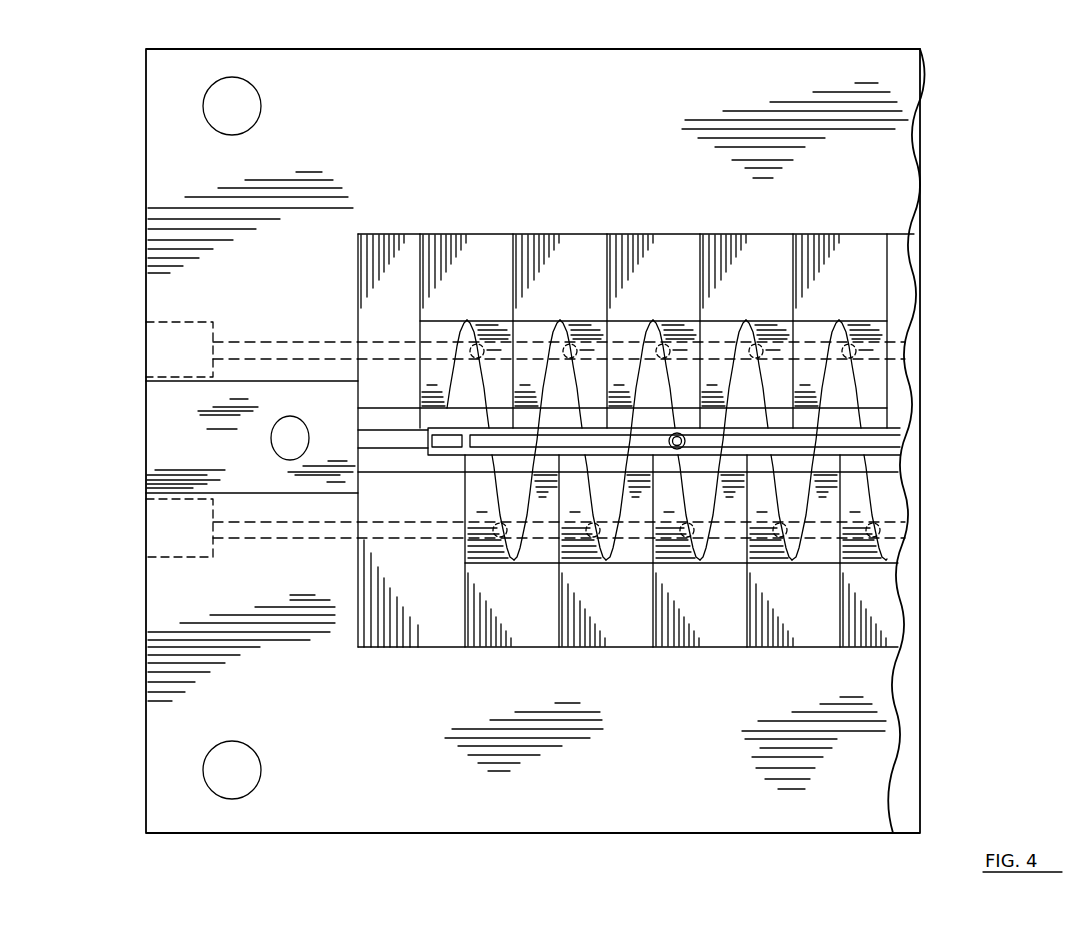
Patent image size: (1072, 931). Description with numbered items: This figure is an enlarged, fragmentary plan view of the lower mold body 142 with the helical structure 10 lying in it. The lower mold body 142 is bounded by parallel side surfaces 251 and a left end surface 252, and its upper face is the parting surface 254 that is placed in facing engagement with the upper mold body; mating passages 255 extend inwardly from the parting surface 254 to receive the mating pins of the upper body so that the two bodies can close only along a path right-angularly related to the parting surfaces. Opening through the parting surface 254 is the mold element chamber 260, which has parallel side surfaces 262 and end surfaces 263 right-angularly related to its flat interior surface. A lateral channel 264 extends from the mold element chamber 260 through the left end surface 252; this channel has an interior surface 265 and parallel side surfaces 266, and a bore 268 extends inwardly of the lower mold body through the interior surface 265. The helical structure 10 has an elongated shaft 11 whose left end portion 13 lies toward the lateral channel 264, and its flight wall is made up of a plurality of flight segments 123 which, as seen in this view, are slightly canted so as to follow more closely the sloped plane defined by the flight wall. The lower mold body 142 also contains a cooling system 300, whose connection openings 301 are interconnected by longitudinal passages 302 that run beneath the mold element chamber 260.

The helical structure 10 is at (648, 321).
The elongated shaft 11 is at (898, 432).
The second or left end portion 13 is at (428, 457).
The flight segments 123 is at (538, 424).
The lower mold body 142 is at (893, 718).
The parallel side surfaces 251 is at (164, 49).
The left end surface 252 is at (150, 670).
The parting surface 254 is at (412, 164).
The mating passages 255 is at (248, 121).
The mold element chamber 260 is at (458, 252).
The parallel side surfaces 262 is at (562, 250).
The end surfaces 263 is at (368, 606).
The lateral channel 264 is at (318, 493).
The interior surface 265 is at (311, 408).
The parallel side surfaces 266 is at (218, 382).
The bore 268 is at (296, 455).
The cooling system 300 is at (250, 540).
The connection openings 301 is at (174, 321).
The longitudinal passages 302 is at (272, 340).